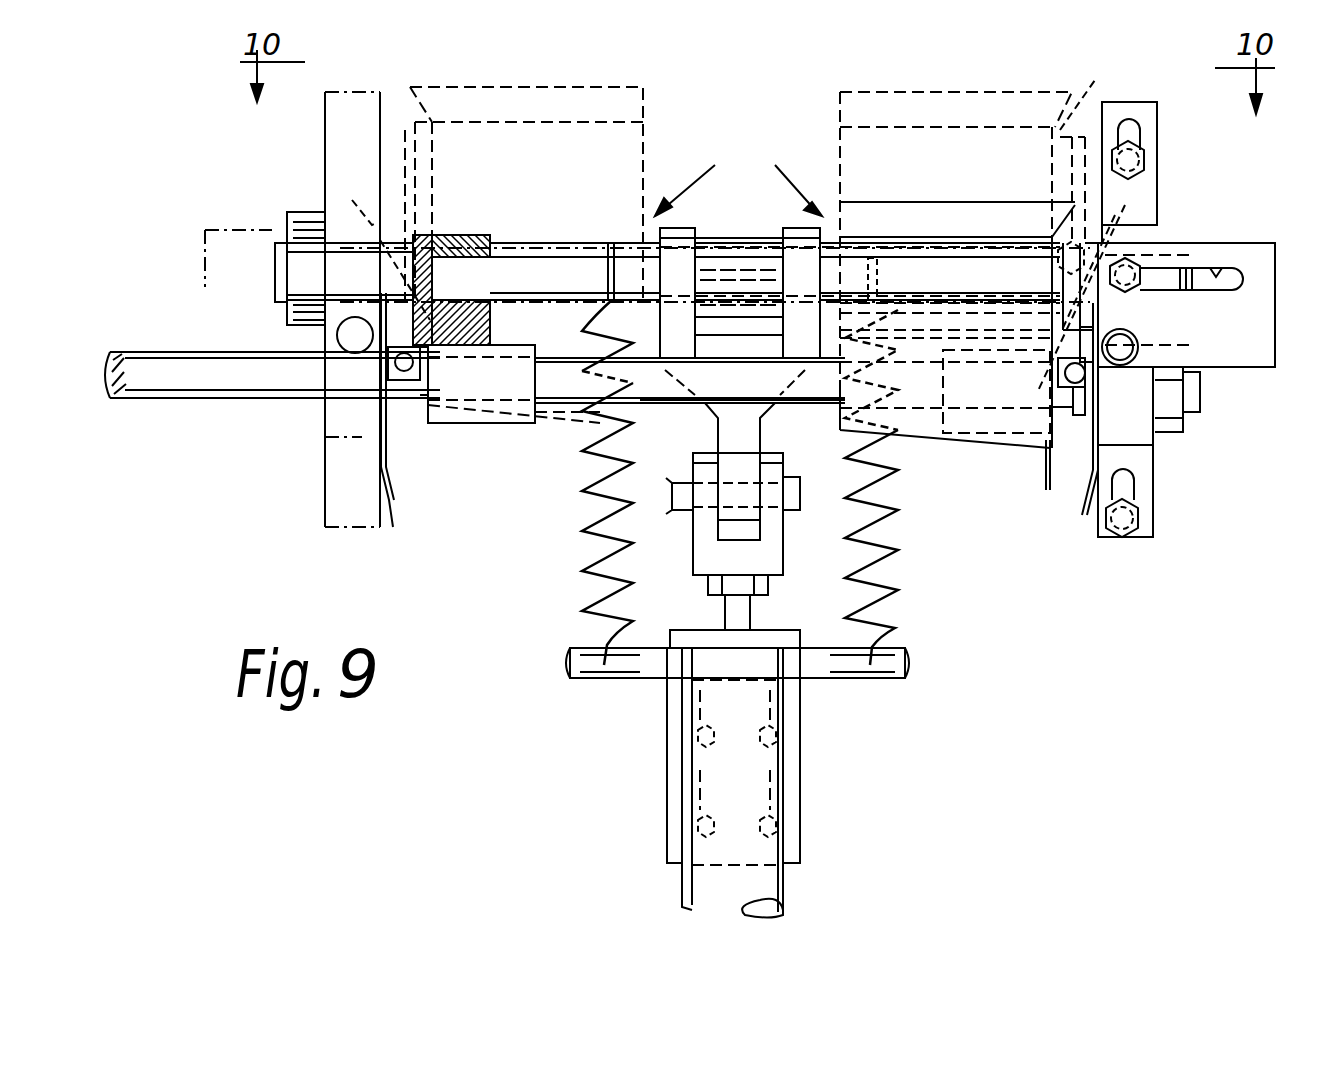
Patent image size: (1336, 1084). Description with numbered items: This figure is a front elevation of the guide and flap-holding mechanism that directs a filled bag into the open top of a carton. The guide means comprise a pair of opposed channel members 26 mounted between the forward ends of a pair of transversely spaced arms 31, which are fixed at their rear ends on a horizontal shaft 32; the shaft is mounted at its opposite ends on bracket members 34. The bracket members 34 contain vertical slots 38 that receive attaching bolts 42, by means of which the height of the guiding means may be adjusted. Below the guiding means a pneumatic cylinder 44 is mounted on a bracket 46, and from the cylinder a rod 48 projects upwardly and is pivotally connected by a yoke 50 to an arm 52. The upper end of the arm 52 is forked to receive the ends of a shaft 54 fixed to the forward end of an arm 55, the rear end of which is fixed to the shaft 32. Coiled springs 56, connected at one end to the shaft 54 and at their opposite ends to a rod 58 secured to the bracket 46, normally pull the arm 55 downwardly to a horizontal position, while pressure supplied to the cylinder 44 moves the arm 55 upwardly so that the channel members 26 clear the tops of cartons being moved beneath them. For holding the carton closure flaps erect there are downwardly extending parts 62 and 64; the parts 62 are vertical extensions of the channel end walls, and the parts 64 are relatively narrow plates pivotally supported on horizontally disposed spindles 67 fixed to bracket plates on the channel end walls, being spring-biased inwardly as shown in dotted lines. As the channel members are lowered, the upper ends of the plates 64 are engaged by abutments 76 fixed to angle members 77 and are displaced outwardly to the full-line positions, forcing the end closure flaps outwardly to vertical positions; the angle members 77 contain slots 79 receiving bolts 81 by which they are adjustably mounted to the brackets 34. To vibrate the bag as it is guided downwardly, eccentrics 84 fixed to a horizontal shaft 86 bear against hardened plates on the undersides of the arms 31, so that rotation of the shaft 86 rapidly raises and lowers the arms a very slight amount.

The channel member 26 is at (738, 174).
The arm 31 is at (1091, 91).
The horizontal shaft 32 is at (272, 250).
The bracket member 34 is at (1155, 110).
The vertical slot 38 is at (1178, 470).
The attaching bolt 42 is at (1145, 162).
The pneumatic cylinder 44 is at (685, 805).
The bracket 46 is at (800, 760).
The rod 48 is at (745, 608).
The yoke 50 is at (775, 548).
The arm 52 is at (722, 428).
The shaft 54 is at (527, 268).
The arm 55 is at (735, 240).
The coiled spring 56 is at (928, 580).
The rod 58 is at (890, 680).
The downwardly extending part 62 is at (1048, 492).
The downwardly extending part 64 is at (740, 429).
The spindle 67 is at (404, 372).
The abutment 76 is at (338, 335).
The angle member 77 is at (1270, 265).
The slot 79 is at (1216, 276).
The bolt 81 is at (1135, 270).
The eccentric 84 is at (500, 425).
The horizontal shaft 86 is at (222, 400).